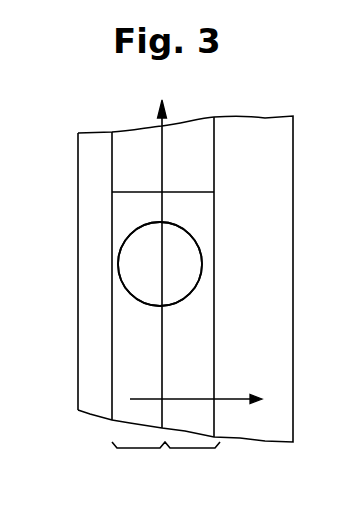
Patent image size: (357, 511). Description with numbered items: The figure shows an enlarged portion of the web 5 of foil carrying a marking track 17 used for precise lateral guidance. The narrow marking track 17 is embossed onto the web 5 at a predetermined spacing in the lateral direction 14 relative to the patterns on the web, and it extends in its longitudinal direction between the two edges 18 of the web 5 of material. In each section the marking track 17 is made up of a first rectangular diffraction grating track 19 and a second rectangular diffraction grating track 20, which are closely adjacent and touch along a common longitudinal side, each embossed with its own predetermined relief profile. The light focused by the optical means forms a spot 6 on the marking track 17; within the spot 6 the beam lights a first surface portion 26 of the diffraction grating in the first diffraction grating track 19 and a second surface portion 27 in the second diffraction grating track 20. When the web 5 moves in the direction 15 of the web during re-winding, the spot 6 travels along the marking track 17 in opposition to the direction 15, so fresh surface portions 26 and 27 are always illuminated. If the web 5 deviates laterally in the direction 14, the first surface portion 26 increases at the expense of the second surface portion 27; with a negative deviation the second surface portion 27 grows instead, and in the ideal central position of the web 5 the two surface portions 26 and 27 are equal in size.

The web of foil 5 is at (263, 135).
The spot 6 is at (185, 230).
The lateral direction 14 is at (225, 395).
The direction of the web 15 is at (160, 121).
The marking track 17 is at (166, 464).
The edges of the web 18 is at (78, 238).
The first rectangular diffraction grating track 19 is at (142, 203).
The second rectangular diffraction grating track 20 is at (188, 203).
The first surface portion 26 is at (148, 283).
The second surface portion 27 is at (185, 258).